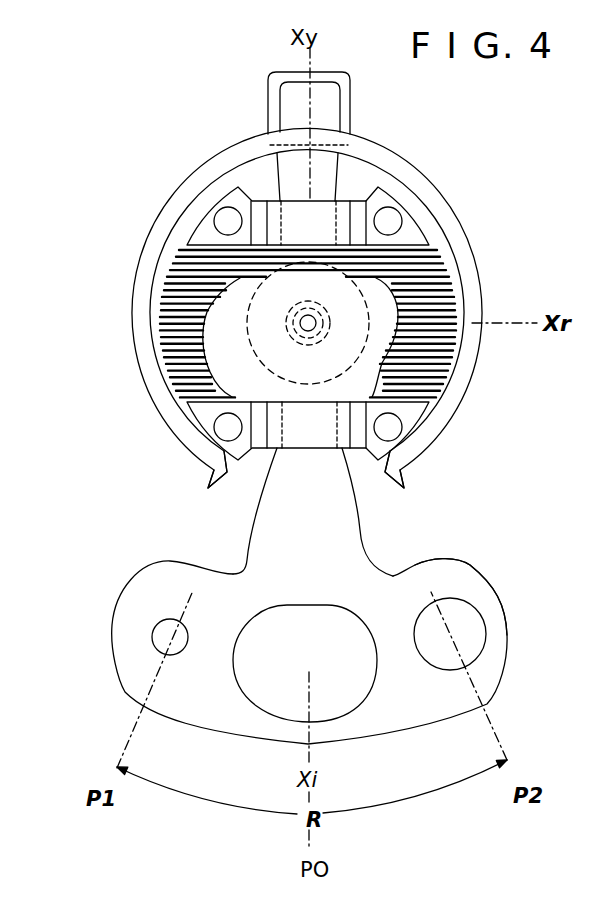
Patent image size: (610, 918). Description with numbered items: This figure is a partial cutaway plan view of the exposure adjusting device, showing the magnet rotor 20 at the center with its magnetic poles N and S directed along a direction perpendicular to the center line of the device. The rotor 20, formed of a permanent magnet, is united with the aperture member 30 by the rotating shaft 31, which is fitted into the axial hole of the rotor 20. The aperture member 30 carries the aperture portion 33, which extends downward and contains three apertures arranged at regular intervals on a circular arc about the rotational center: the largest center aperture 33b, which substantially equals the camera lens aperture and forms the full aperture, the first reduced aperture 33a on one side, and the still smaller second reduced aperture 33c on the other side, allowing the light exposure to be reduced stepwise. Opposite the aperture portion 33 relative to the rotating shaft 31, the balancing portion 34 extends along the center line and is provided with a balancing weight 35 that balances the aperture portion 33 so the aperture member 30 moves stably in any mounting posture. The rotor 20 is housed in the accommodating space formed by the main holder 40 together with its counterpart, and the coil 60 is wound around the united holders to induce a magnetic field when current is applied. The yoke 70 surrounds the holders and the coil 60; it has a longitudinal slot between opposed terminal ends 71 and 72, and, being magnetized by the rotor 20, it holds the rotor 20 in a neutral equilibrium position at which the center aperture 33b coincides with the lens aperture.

The rotor 20 is at (368, 318).
The aperture member 30 is at (108, 627).
The rotating shaft 31 is at (308, 331).
The aperture portion 33 is at (487, 587).
The first reduced aperture 33a is at (426, 658).
The center aperture 33b is at (330, 722).
The second reduced aperture 33c is at (185, 650).
The balancing portion 34 is at (275, 115).
The balancing weight 35 is at (268, 97).
The main holder 40 is at (403, 228).
The coil 60 is at (428, 266).
The yoke 70 is at (380, 158).
The terminal end 71 is at (210, 484).
The terminal end 72 is at (400, 486).